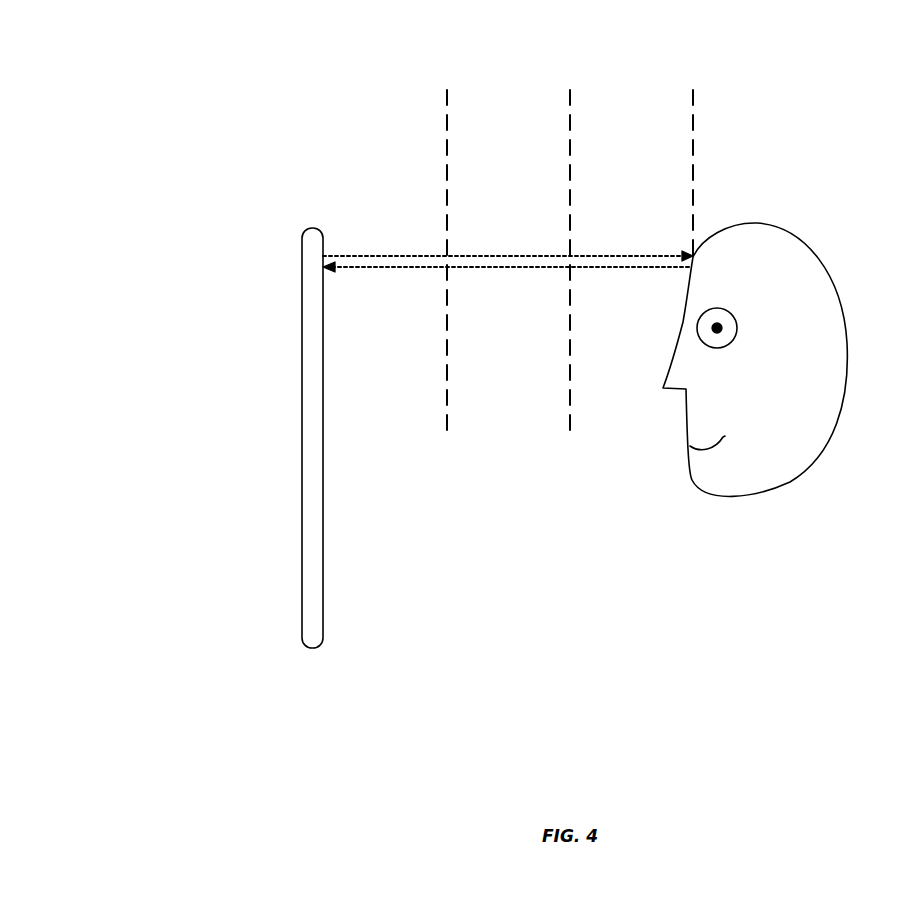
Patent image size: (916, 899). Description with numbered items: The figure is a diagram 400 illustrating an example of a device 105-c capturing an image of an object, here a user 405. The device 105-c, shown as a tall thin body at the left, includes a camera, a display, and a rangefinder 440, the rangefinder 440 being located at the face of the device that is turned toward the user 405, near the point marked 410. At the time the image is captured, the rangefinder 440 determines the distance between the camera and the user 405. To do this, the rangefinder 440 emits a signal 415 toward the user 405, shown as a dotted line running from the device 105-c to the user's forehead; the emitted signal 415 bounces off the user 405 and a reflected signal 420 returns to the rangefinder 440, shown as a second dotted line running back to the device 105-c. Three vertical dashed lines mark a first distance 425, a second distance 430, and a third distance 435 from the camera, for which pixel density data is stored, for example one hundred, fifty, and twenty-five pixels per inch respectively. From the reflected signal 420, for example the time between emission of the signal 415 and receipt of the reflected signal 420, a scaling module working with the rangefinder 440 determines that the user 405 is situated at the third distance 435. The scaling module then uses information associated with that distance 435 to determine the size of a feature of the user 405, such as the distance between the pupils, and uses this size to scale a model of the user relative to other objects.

The diagram 400 is at (100, 91).
The device 105-c is at (323, 540).
The user 405 is at (842, 302).
The device surface/ranging reference point 410 is at (332, 243).
The emitted signal 415 is at (367, 257).
The reflected signal 420 is at (667, 270).
The first distance 425 is at (447, 98).
The second distance 430 is at (570, 98).
The third distance 435 is at (693, 98).
The rangefinder 440 is at (347, 282).